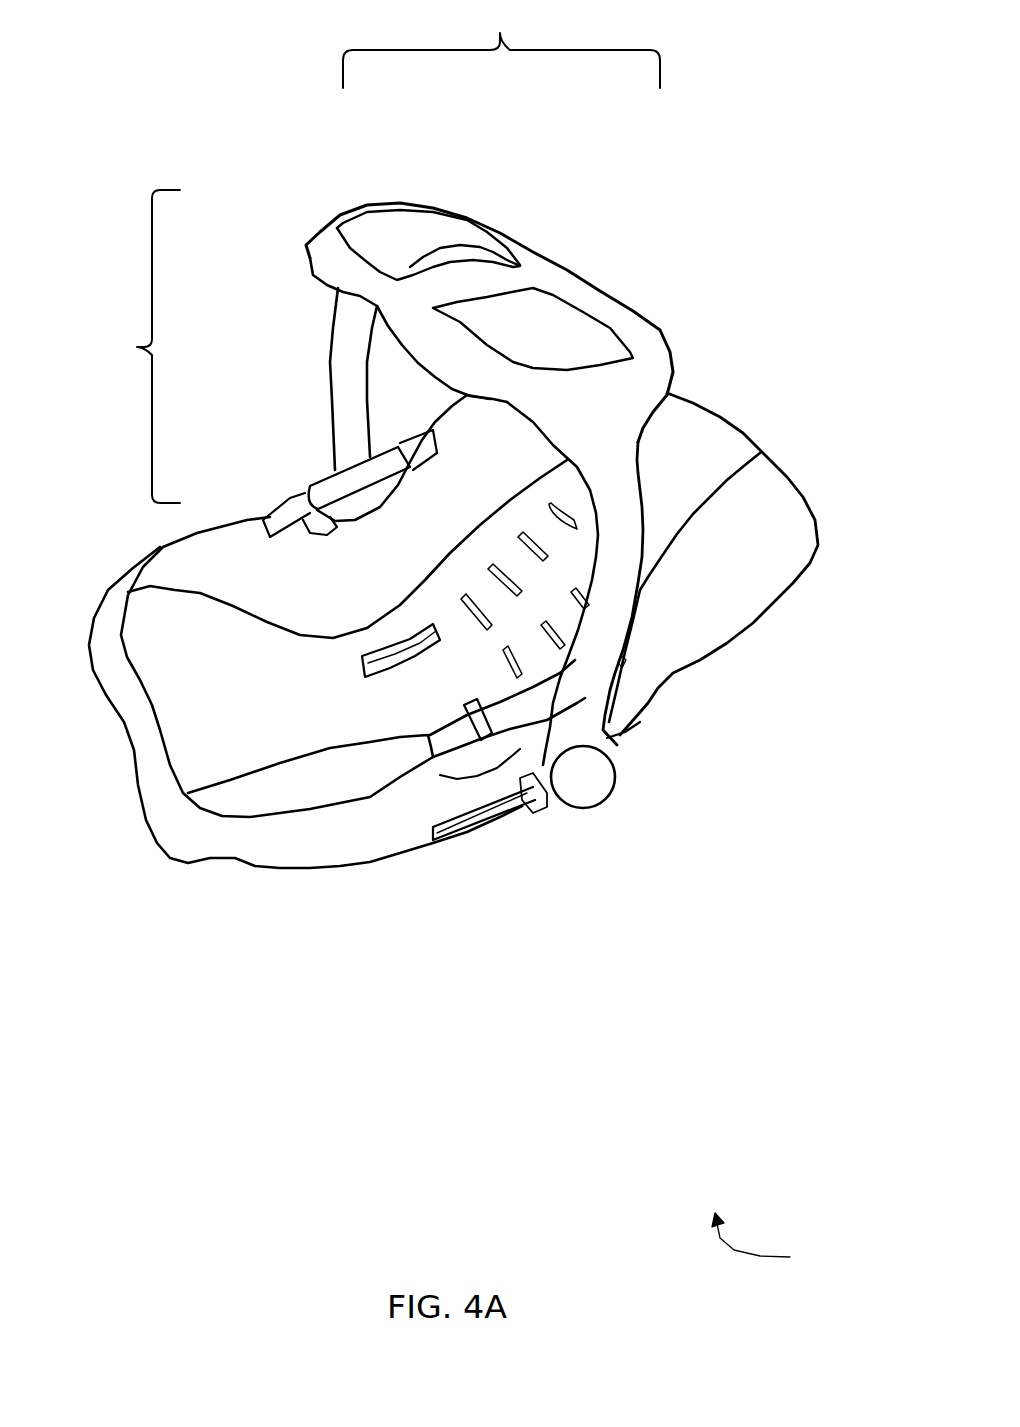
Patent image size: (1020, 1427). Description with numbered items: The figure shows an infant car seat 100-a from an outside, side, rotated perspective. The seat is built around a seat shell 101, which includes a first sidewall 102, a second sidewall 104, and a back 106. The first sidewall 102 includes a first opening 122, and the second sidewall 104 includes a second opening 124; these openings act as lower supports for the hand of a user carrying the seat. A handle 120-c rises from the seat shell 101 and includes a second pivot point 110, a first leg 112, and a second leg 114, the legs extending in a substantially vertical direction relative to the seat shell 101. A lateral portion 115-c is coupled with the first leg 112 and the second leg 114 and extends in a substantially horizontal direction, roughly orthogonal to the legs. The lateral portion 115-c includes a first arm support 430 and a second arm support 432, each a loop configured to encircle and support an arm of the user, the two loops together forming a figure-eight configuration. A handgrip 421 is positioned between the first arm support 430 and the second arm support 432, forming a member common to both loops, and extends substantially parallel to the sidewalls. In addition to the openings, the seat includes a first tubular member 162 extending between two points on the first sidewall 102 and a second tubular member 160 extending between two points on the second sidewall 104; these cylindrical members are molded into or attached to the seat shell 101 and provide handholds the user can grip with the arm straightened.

The infant car seat 100-a is at (786, 1240).
The seat shell 101 is at (651, 750).
The first sidewall 102 is at (341, 634).
The second sidewall 104 is at (386, 819).
The back 106 is at (719, 544).
The second pivot point 110 is at (600, 794).
The first leg 112 is at (338, 412).
The second leg 114 is at (749, 583).
The lateral portion 115-c is at (501, 44).
The handle 120-c is at (120, 346).
The first opening 122 is at (290, 793).
The second opening 124 is at (490, 817).
The second tubular member 160 is at (552, 818).
The first tubular member 162 is at (233, 655).
The handgrip 421 is at (475, 218).
The first arm support 430 is at (461, 305).
The second arm support 432 is at (676, 516).